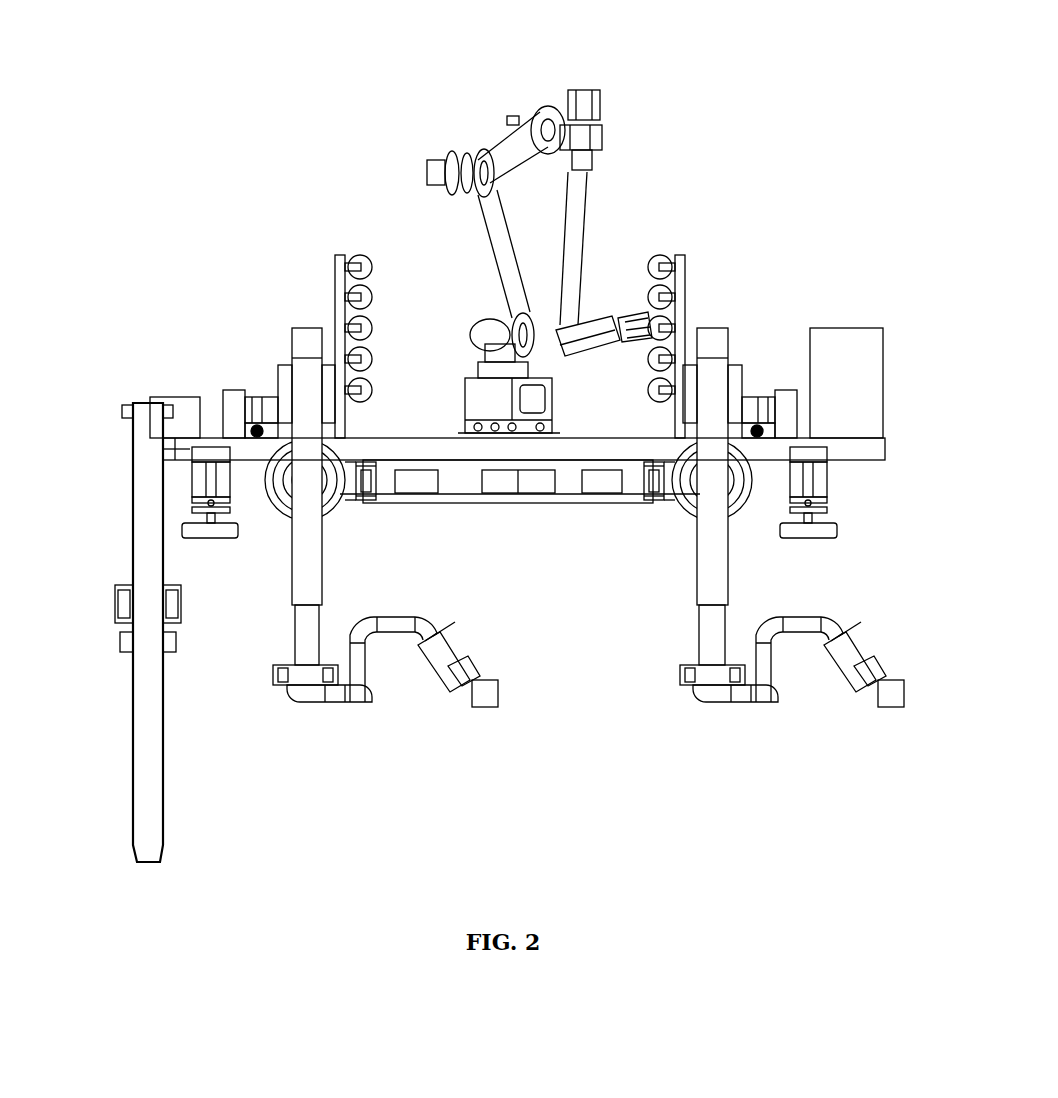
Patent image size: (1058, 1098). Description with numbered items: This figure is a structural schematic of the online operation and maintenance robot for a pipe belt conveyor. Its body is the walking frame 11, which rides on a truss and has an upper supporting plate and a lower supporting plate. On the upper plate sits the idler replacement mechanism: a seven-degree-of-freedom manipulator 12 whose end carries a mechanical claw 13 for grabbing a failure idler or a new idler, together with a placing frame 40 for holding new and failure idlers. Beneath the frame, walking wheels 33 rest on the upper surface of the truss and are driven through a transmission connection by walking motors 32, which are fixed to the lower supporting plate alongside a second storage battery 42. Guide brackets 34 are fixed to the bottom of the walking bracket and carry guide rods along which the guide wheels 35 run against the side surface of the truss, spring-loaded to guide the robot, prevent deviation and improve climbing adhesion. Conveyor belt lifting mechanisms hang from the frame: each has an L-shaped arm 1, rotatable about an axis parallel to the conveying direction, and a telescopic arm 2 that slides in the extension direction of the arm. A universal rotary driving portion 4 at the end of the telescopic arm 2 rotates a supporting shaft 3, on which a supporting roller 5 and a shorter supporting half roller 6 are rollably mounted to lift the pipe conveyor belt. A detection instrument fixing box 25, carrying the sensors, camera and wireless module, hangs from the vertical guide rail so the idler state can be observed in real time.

The L-shaped arm 1 is at (713, 340).
The telescopic arm 2 is at (710, 637).
The supporting shaft 3 is at (803, 623).
The universal rotary driving portion 4 is at (713, 686).
The supporting roller 5 is at (855, 672).
The supporting half roller 6 is at (890, 700).
The walking frame 11 is at (608, 448).
The seven-degree-of-freedom manipulator 12 is at (578, 90).
The mechanical claw 13 is at (600, 330).
The detection instrument fixing box 25 is at (123, 613).
The walking motor 32 is at (378, 500).
The walking wheel 33 is at (290, 458).
The guide bracket 34 is at (827, 483).
The guide wheel 35 is at (832, 530).
The placing frame 40 is at (350, 267).
The second storage battery 42 is at (528, 480).